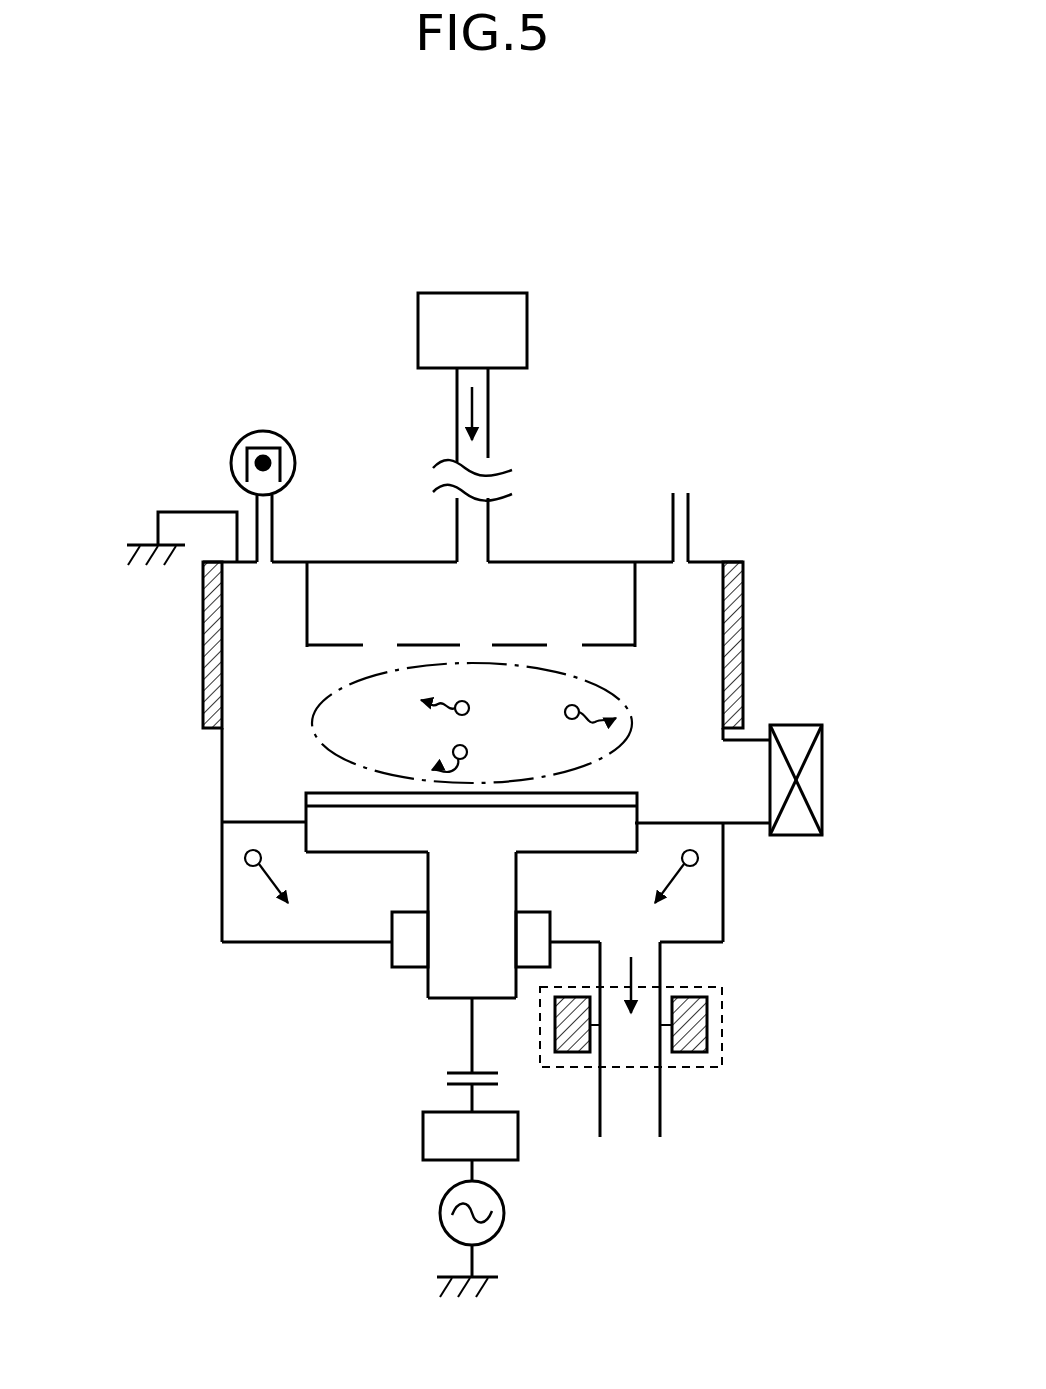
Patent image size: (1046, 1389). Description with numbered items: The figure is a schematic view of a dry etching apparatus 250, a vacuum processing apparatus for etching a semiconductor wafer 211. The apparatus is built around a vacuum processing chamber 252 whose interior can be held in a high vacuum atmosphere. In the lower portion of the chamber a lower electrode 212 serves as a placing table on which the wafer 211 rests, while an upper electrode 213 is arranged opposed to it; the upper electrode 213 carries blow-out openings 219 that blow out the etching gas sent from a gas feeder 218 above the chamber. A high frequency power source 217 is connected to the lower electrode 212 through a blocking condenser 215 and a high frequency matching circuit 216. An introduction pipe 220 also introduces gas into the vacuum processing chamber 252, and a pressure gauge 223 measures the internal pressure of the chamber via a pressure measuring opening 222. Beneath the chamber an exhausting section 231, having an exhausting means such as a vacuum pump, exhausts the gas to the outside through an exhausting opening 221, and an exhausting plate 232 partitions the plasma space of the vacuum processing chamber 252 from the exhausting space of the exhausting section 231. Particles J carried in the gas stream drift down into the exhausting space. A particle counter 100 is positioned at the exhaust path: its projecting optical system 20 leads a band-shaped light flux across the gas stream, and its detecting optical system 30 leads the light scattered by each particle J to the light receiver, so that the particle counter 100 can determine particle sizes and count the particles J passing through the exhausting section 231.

The particle counter 100 is at (723, 1109).
The projecting optical system 20 is at (683, 1070).
The detecting optical system 30 is at (567, 1070).
The semiconductor wafer 211 is at (305, 800).
The lower electrode 212 is at (427, 987).
The upper electrode 213 is at (635, 613).
The blocking condenser 215 is at (453, 1072).
The high frequency matching circuit 216 is at (423, 1140).
The high frequency power source 217 is at (440, 1223).
The gas feeder 218 is at (458, 302).
The blow-out openings 219 is at (482, 620).
The introduction pipe 220 is at (690, 523).
The exhausting opening 221 is at (660, 965).
The pressure measuring opening 222 is at (273, 525).
The pressure gauge 223 is at (268, 432).
The exhausting section 231 is at (707, 893).
The exhausting plate 232 is at (250, 822).
The dry etching apparatus 250 is at (752, 488).
The vacuum processing chamber 252 is at (220, 743).
The particle J is at (245, 855).